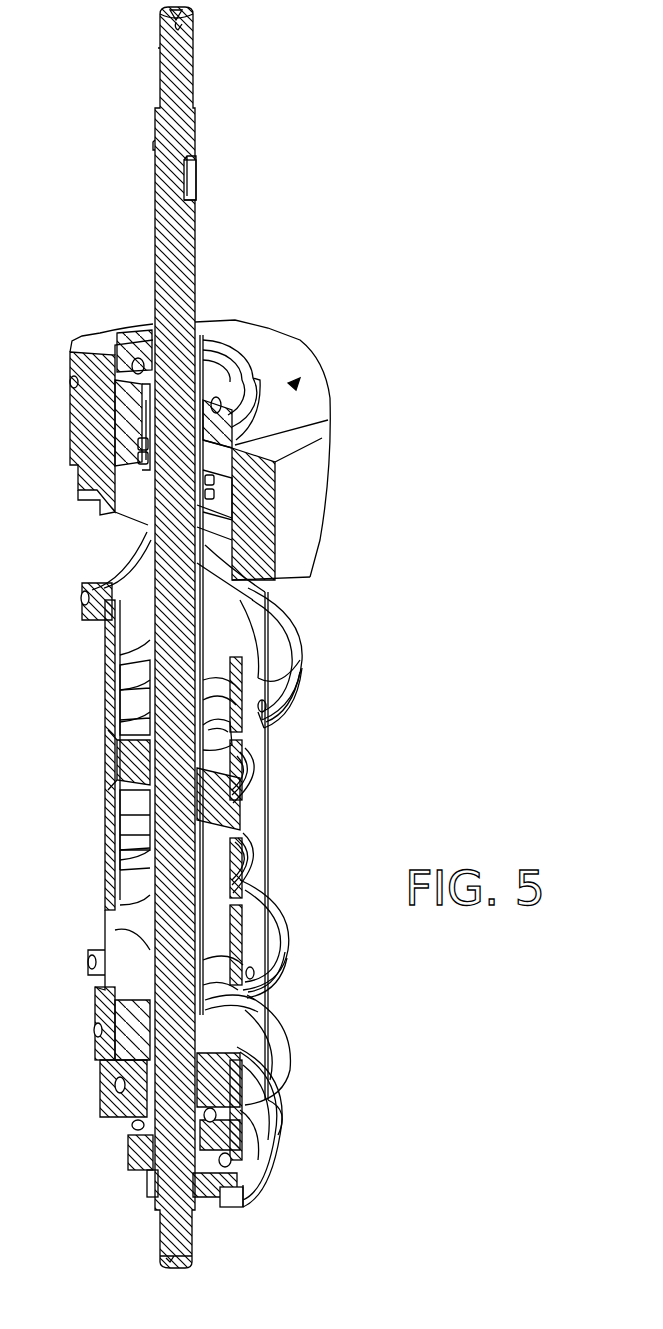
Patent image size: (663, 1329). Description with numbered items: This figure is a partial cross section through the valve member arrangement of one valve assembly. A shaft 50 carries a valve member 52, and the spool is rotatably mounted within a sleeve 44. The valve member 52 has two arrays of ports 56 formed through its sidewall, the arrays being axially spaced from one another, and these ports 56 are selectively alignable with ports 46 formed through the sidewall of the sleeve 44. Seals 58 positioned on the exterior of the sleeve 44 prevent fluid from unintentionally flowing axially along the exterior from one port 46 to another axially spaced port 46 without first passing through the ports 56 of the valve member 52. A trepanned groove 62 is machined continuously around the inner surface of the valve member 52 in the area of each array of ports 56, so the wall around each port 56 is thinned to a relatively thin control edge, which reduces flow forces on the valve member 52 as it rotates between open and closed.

The sleeve 44 is at (262, 818).
The ports 46 is at (257, 634).
The shaft 50 is at (165, 927).
The valve member 52 is at (127, 833).
The ports 56 is at (210, 725).
The seals 58 is at (281, 693).
The trepanned groove 62 is at (118, 706).